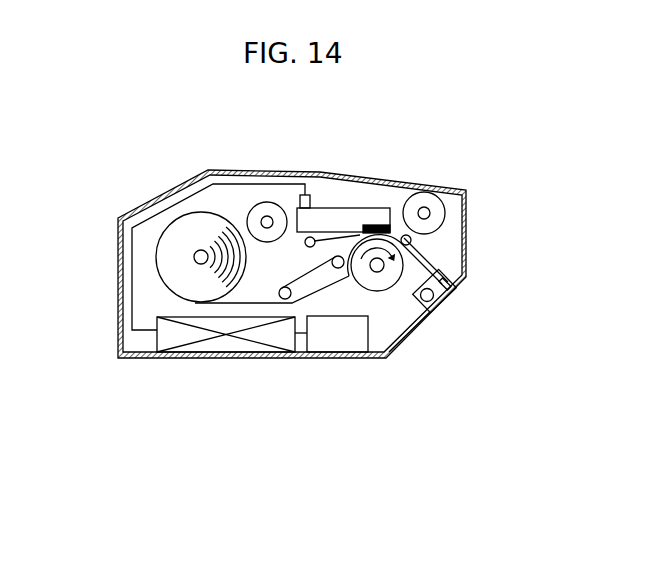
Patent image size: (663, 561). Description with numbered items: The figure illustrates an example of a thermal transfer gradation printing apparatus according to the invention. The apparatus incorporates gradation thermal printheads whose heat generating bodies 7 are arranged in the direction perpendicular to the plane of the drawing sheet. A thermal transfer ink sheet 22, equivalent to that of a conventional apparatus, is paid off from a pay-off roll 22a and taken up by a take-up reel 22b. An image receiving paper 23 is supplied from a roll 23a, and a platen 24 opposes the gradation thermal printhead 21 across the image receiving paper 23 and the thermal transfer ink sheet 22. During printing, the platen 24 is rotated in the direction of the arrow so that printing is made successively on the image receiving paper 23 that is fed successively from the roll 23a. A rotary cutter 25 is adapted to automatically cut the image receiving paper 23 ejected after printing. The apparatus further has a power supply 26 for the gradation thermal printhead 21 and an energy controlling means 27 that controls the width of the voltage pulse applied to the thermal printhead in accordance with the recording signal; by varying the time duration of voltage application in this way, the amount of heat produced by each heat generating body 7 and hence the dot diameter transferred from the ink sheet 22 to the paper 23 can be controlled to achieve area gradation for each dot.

The heat generating bodies 7 is at (395, 157).
The gradation thermal printhead 21 is at (325, 217).
The thermal transfer ink sheet 22 is at (305, 244).
The pay-off roll 22a is at (265, 208).
The take-up reel 22b is at (430, 203).
The image receiving paper 23 is at (328, 278).
The roll 23a is at (187, 228).
The platen 24 is at (393, 265).
The rotary cutter 25 is at (450, 303).
The power supply 26 is at (337, 335).
The energy controlling means 27 is at (232, 342).